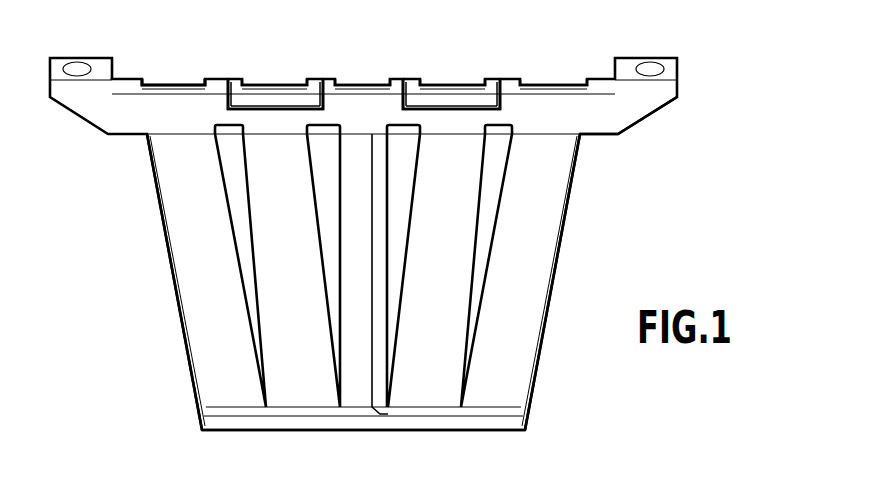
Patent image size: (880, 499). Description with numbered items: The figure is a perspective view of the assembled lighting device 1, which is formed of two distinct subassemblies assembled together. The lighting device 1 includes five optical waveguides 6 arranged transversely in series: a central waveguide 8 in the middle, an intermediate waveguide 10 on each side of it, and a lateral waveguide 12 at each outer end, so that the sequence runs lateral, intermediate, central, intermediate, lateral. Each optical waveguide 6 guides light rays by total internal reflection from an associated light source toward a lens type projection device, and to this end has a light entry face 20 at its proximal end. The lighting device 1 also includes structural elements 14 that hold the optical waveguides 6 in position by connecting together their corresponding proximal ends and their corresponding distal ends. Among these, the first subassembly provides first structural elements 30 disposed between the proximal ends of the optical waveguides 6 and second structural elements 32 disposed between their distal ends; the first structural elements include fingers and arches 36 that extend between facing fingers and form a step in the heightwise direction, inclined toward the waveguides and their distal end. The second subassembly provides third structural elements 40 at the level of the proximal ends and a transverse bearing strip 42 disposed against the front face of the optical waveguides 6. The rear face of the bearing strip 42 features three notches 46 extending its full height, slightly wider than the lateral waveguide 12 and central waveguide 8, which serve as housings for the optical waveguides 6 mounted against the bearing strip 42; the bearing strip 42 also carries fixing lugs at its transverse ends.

The lighting device 1 is at (373, 240).
The optical waveguide 6 is at (160, 283).
The central waveguide 8 is at (363, 388).
The intermediate waveguide 10 is at (415, 380).
The lateral waveguide 12 is at (528, 258).
The structural elements 14 is at (118, 145).
The light entry face 20 is at (183, 82).
The first structural elements 30 is at (445, 72).
The second structural elements 32 is at (270, 437).
The arch 36 is at (310, 82).
The third structural elements 40 is at (672, 92).
The bearing strip 42 is at (590, 120).
The notch 46 is at (155, 80).